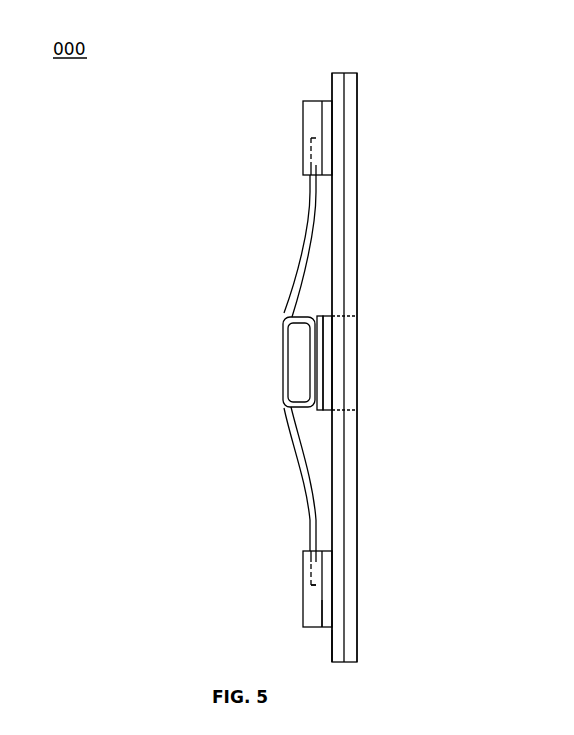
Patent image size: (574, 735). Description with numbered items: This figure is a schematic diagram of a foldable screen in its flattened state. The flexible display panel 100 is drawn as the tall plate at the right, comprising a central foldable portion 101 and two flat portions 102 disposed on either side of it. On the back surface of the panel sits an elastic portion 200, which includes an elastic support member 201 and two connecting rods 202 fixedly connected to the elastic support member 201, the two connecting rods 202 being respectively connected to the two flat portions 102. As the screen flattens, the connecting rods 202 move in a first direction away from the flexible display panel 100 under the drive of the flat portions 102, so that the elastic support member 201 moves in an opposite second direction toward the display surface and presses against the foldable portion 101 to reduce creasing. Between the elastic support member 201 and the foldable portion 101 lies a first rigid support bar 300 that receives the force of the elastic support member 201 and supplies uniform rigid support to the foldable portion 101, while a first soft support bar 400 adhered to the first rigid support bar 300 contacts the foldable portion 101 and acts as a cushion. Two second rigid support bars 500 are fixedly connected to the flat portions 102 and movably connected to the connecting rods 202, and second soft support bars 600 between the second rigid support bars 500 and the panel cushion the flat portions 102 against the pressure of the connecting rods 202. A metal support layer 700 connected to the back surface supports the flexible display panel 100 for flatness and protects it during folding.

The flexible display panel 100 is at (357, 651).
The foldable portion 101 is at (391, 367).
The flat portions 102 is at (353, 153).
The elastic portions 200 is at (215, 363).
The elastic support member 201 is at (242, 362).
The connecting rods 202 is at (310, 211).
The first rigid support bar 300 is at (322, 340).
The first soft support bar 400 is at (327, 322).
The second rigid support bars 500 is at (318, 598).
The second soft support bars 600 is at (328, 619).
The metal support layer 700 is at (332, 651).